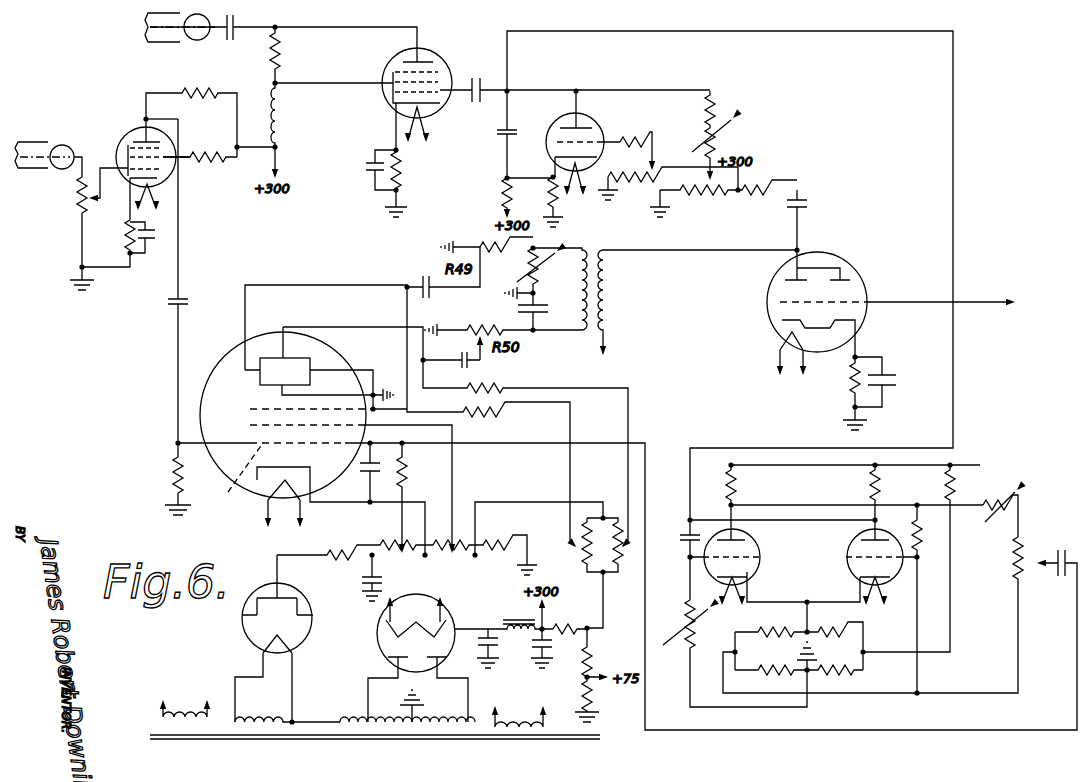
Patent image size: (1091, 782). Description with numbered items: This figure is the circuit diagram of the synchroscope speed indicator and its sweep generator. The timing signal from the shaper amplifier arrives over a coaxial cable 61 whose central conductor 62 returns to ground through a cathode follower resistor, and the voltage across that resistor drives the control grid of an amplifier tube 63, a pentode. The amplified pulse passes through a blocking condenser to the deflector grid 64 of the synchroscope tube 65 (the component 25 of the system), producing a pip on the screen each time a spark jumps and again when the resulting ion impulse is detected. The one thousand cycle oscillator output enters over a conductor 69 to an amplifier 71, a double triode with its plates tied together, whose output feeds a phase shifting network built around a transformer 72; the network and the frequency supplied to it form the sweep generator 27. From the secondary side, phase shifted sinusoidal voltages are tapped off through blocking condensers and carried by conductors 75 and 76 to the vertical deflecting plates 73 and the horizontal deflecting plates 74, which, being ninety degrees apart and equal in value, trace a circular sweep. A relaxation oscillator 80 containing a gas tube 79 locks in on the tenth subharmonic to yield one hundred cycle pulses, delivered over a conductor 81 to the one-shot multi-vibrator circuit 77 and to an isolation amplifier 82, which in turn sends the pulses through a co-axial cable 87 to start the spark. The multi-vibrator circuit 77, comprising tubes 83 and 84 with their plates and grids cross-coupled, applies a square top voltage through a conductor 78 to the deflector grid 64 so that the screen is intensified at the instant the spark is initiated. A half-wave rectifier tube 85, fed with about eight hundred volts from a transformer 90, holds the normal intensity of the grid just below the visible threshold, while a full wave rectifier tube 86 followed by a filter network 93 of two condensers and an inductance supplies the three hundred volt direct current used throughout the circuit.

The synchroscope tube component 25 is at (166, 377).
The sweep generator 27 is at (665, 301).
The coaxial cable 61 is at (52, 138).
The central conductor 62 is at (34, 175).
The amplifier tube 63 is at (131, 131).
The deflector grid 64 is at (240, 477).
The synchroscope tube 65 is at (299, 426).
The conductor 69 is at (972, 302).
The amplifier 71 is at (853, 267).
The transformer 72 is at (549, 357).
The vertical deflecting plates 73 is at (273, 350).
The horizontal deflecting plates 74 is at (258, 375).
The conductor 75 is at (336, 285).
The conductor 76 is at (335, 327).
The one-shot multi-vibrator circuit 77 is at (866, 612).
The conductor 78 is at (723, 733).
The tube 79 is at (591, 128).
The relaxation oscillator 80 is at (594, 77).
The conductor 81 is at (957, 166).
The isolation amplifier 82 is at (440, 57).
The tube 83 is at (344, 30).
The tube 84 is at (846, 555).
The rectifier tube 85 is at (242, 634).
The tube 86 is at (378, 648).
The co-axial cable 87 is at (166, 46).
The transformer 90 is at (375, 725).
The filter network 93 is at (504, 617).